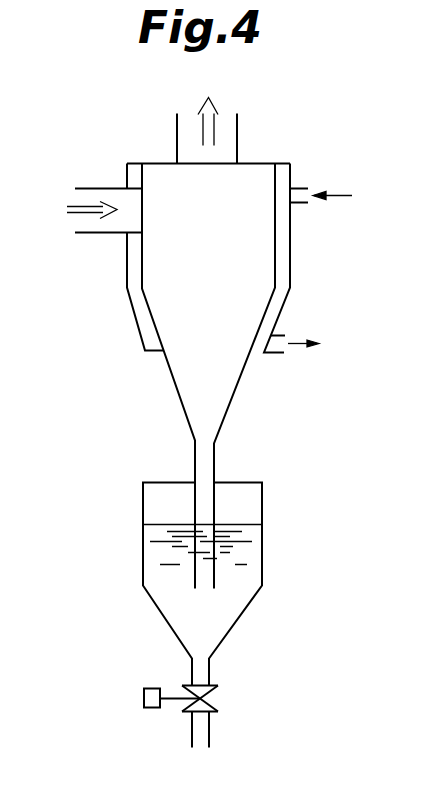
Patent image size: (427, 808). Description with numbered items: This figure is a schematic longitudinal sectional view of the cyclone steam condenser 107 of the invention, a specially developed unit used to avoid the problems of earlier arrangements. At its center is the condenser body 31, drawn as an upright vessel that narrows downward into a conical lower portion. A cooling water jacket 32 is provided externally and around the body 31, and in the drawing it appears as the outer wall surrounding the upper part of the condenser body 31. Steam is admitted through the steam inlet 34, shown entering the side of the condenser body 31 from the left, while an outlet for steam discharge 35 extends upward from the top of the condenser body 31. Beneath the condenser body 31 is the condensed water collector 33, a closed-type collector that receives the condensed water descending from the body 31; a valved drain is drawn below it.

The cyclone steam condenser 107 is at (315, 282).
The condenser body 31 is at (220, 412).
The cooling water jacket 32 is at (280, 307).
The condensed water collector 33 is at (262, 580).
The steam inlet 34 is at (82, 193).
The outlet for steam discharge 35 is at (227, 122).